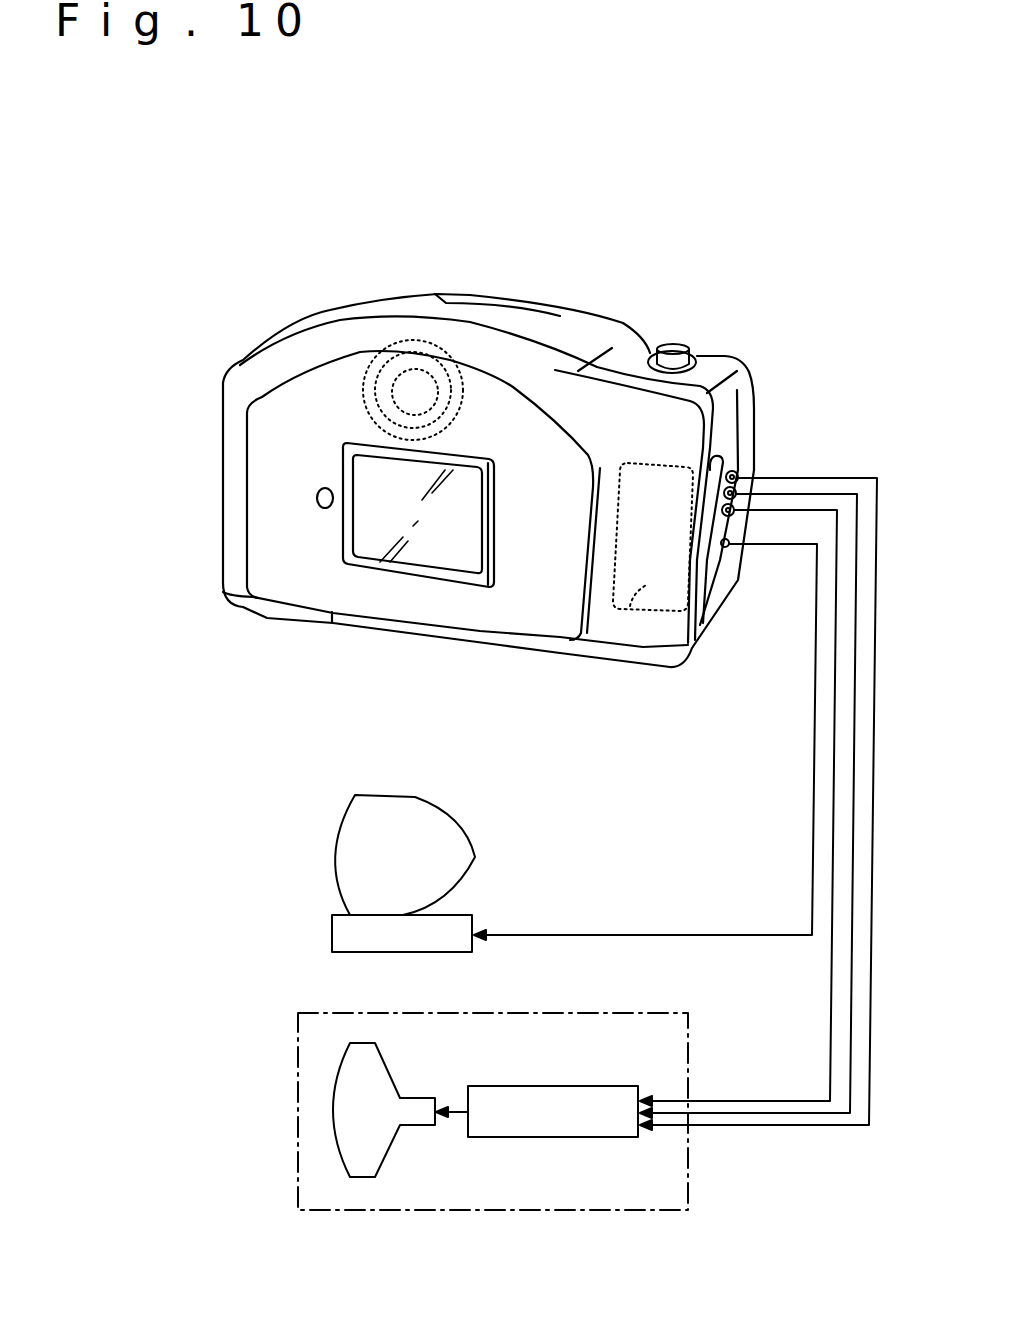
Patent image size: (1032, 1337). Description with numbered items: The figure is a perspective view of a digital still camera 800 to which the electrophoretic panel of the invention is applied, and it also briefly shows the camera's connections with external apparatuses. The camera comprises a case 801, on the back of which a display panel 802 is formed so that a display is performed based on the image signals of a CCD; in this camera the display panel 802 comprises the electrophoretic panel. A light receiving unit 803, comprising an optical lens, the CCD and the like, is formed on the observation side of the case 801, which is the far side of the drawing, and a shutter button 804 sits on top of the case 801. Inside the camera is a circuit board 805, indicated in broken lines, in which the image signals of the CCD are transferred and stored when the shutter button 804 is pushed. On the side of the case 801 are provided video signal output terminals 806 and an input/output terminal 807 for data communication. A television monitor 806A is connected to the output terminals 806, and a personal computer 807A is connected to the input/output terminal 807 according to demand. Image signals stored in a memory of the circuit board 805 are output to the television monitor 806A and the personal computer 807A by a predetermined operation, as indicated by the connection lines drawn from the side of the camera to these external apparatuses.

The digital still camera 800 is at (565, 271).
The case 801 is at (237, 432).
The display panel 802 is at (450, 547).
The light receiving unit 803 is at (455, 345).
The shutter button 804 is at (671, 347).
The circuit board 805 is at (627, 612).
The video signal output terminals 806 is at (743, 456).
The input/output terminal 807 is at (724, 548).
The personal computer 807A is at (340, 830).
The television monitor 806A is at (297, 1060).